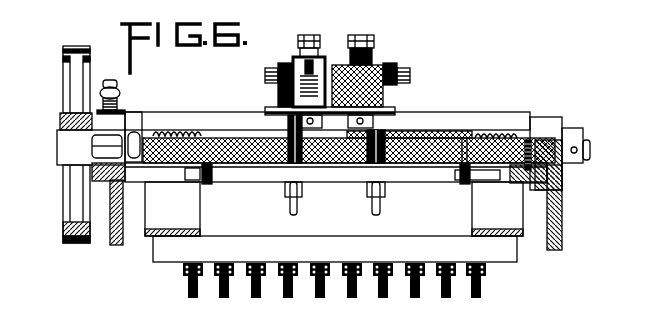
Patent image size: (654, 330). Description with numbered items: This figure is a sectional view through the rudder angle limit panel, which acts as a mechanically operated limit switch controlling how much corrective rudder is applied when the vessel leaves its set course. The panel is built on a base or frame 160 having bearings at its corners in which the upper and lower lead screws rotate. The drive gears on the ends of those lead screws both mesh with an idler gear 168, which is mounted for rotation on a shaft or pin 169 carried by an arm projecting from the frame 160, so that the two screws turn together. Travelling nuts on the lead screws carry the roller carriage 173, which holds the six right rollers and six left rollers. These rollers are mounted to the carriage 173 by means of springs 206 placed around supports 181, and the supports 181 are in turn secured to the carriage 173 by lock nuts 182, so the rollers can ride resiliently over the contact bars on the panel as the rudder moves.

The base or frame 160 is at (562, 200).
The idler gear 168 is at (63, 229).
The shaft or pin 169 is at (57, 145).
The roller carriage 173 is at (395, 112).
The supports 181 is at (300, 55).
The lock nuts 182 is at (352, 36).
The springs 206 is at (342, 60).